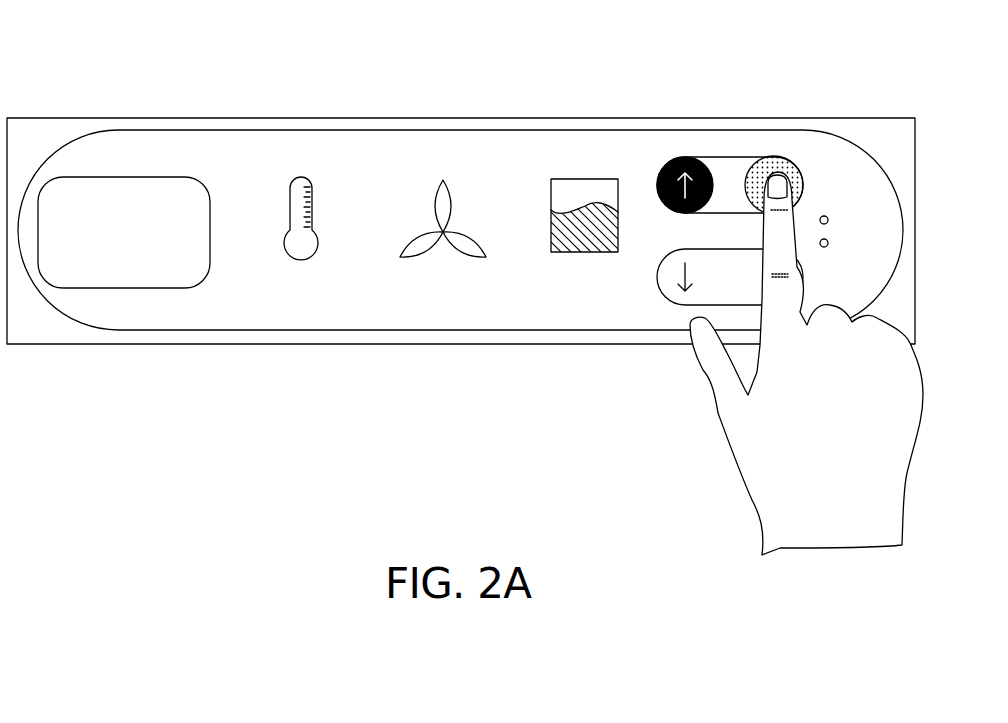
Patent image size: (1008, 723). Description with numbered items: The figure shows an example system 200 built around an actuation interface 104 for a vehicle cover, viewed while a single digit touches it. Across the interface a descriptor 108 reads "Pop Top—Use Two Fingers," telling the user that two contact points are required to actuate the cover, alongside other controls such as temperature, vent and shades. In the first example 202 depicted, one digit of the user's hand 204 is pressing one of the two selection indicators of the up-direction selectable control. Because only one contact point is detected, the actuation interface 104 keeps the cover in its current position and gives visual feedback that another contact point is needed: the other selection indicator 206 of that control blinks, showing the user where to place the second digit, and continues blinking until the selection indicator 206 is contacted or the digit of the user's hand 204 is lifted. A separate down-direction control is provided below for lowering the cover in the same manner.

The system 200 is at (183, 71).
The actuation interface 104 is at (745, 113).
The descriptor 108 is at (167, 288).
The first example 202 is at (448, 397).
The user's hand 204 is at (742, 479).
The selection indicator 206 is at (664, 170).